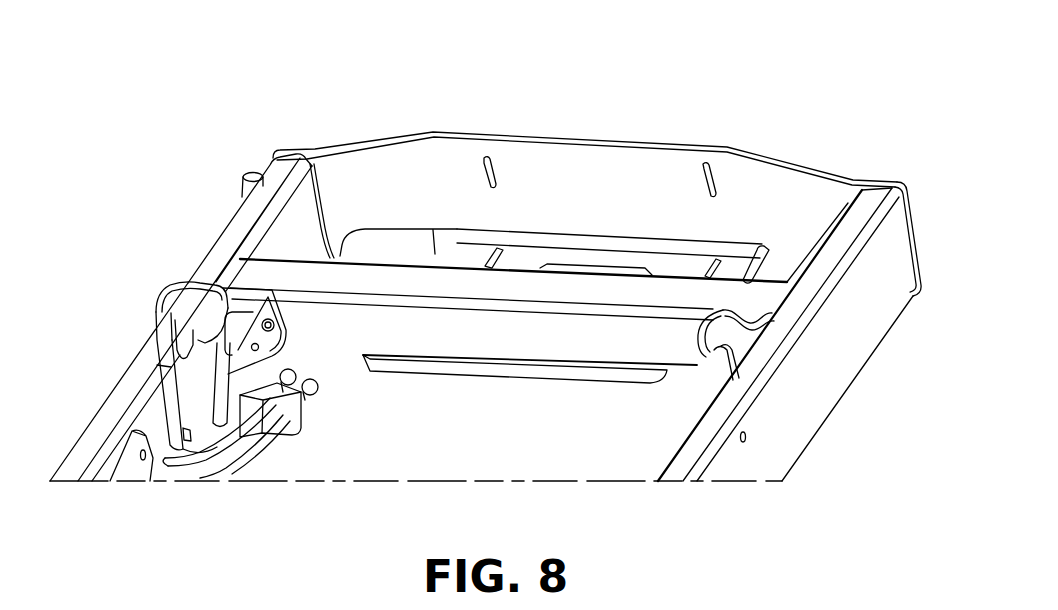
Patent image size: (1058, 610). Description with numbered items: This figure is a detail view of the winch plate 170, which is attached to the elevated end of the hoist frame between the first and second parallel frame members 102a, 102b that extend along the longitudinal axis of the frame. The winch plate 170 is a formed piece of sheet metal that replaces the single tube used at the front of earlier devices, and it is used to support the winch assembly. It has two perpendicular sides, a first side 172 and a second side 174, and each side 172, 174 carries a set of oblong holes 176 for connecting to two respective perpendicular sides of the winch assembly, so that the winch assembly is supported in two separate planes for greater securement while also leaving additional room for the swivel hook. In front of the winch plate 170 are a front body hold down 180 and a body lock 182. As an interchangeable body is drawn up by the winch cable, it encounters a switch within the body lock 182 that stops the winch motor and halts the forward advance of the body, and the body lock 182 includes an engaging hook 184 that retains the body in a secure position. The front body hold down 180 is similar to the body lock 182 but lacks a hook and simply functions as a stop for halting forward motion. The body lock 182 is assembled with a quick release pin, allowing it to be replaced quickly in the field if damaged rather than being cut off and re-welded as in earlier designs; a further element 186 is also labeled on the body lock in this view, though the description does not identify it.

The first frame member 102a is at (853, 375).
The second frame member 102b is at (210, 247).
The winch plate 170 is at (477, 248).
The first side 172 is at (585, 156).
The second side 174 is at (453, 260).
The oblong holes 176 is at (717, 174).
The front body hold down 180 is at (697, 367).
The body lock 182 is at (163, 300).
The engaging hook 184 is at (157, 365).
The mounting bracket 186 is at (288, 342).